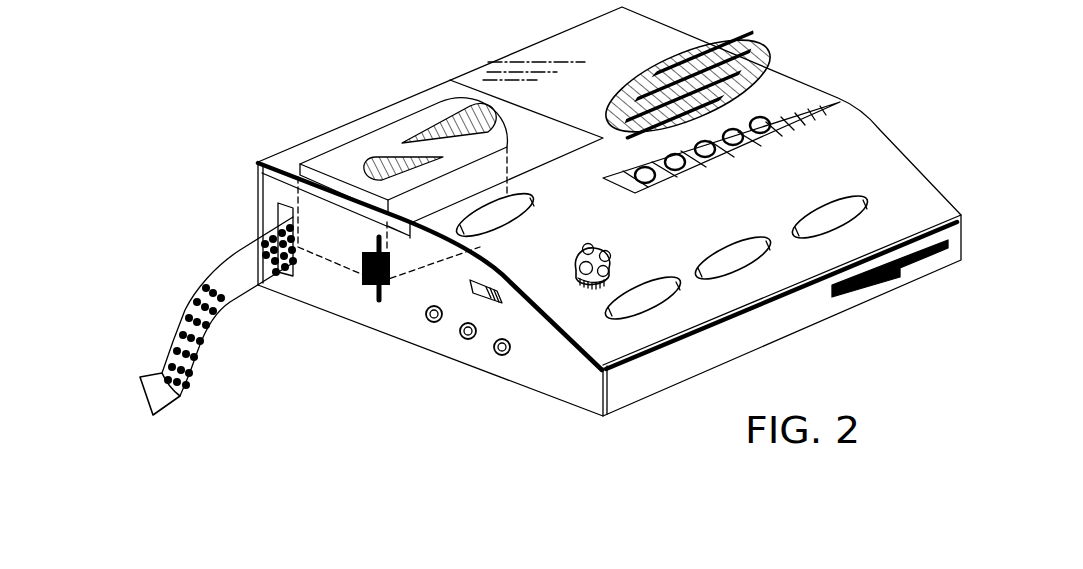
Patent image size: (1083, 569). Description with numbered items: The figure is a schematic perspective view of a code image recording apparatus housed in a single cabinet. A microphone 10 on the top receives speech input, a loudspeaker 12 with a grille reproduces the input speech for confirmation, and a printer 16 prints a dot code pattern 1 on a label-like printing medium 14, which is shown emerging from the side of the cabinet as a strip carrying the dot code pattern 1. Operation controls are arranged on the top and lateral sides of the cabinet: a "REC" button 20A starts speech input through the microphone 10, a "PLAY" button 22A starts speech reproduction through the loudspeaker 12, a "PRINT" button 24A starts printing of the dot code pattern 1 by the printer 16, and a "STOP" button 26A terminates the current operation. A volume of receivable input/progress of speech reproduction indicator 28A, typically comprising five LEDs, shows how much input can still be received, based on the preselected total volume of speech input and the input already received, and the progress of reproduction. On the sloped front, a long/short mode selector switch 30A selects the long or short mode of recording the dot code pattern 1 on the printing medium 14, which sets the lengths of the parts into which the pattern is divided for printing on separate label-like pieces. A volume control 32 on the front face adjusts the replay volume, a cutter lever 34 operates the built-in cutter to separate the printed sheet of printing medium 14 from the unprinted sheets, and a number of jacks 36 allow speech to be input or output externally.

The dot code pattern 1 is at (190, 357).
The microphone 10 is at (590, 289).
The loudspeaker 12 is at (644, 73).
The label-like printing medium 14 is at (226, 306).
The printer 16 is at (370, 136).
The "REC" button 20A is at (641, 282).
The "PLAY" button 22A is at (724, 243).
The "PRINT" button 24A is at (537, 208).
The "STOP" button 26A is at (824, 200).
The volume of receivable input/progress of speech reproduction indicator 28A is at (816, 100).
The long/short mode selector switch 30A is at (488, 283).
The volume control 32 is at (888, 284).
The cutter lever 34 is at (364, 260).
The jacks 36 is at (436, 322).